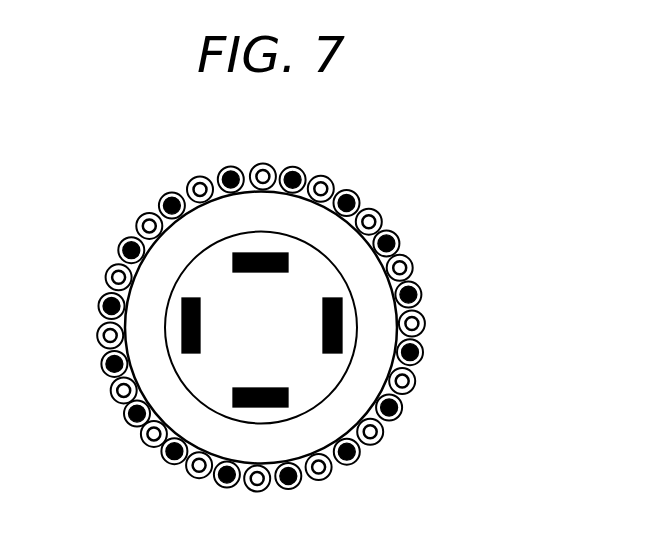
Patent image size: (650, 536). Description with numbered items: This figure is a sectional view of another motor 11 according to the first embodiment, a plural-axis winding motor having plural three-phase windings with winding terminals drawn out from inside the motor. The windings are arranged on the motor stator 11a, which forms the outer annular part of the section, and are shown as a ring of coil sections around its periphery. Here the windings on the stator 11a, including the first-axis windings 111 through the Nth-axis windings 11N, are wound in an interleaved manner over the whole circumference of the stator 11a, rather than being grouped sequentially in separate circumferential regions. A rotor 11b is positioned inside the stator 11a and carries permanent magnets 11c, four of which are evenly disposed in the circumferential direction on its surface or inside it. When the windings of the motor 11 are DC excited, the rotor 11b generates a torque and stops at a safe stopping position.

The motor 11 is at (140, 307).
The first-axis windings 111 is at (274, 153).
The Nth-axis windings 11N is at (350, 191).
The motor stator 11a is at (372, 292).
The rotor 11b is at (330, 373).
The permanent magnets 11c is at (262, 407).